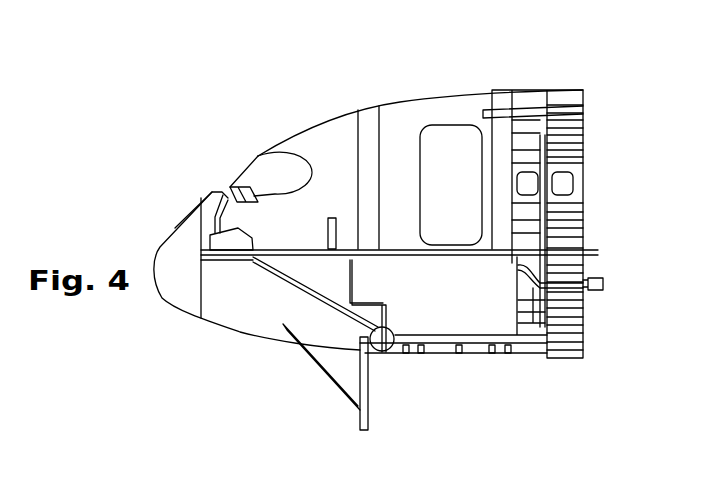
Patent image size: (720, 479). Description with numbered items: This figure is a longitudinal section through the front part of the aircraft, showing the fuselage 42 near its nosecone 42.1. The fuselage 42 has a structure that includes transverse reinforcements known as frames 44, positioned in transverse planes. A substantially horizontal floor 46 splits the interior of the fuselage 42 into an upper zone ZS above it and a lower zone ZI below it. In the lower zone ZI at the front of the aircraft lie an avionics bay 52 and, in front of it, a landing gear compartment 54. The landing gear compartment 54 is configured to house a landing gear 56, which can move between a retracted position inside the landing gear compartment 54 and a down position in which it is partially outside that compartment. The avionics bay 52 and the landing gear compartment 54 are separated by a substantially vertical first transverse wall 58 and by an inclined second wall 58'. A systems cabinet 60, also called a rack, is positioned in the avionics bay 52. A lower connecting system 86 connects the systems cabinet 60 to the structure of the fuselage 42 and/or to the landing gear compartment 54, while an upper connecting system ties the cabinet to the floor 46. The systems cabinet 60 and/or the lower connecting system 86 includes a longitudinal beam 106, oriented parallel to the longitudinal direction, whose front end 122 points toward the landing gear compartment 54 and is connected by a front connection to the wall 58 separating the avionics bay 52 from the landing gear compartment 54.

The nosecone 42.1 is at (178, 123).
The front end 122 is at (390, 328).
The fuselage 42 is at (530, 88).
The systems cabinet 60 is at (496, 282).
The floor 46 is at (557, 248).
The lower zone ZI is at (550, 305).
The avionics bay 52 is at (585, 342).
The landing gear compartment 54 is at (242, 317).
The inclined second wall 58' is at (315, 331).
The landing gear 56 is at (355, 410).
The first transverse wall 58 is at (380, 395).
The lower connecting system 86 is at (407, 355).
The frames 44 is at (453, 355).
The longitudinal beam 106 is at (508, 355).
The upper zone ZS is at (451, 185).